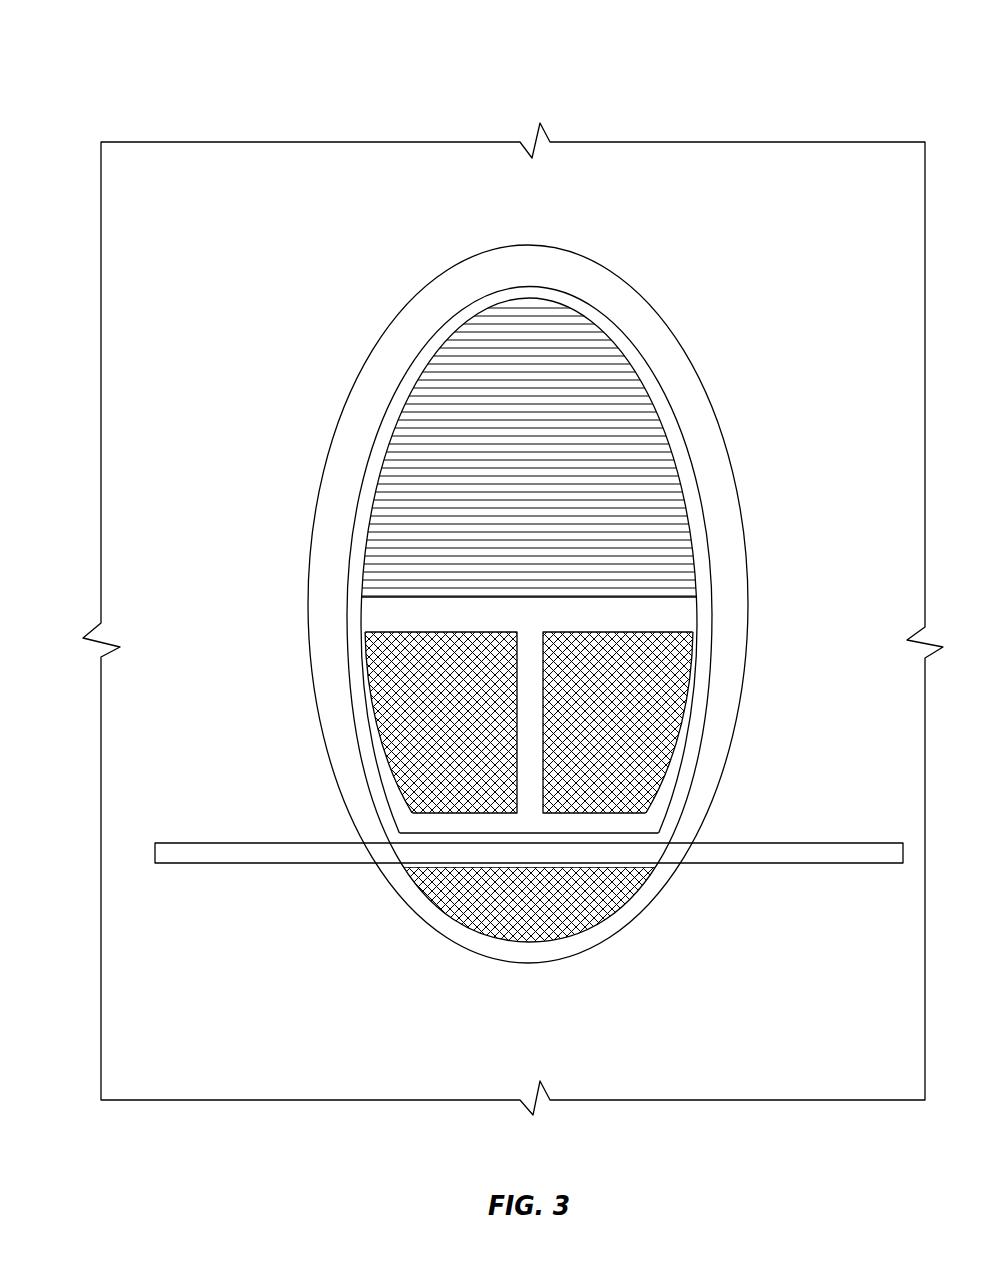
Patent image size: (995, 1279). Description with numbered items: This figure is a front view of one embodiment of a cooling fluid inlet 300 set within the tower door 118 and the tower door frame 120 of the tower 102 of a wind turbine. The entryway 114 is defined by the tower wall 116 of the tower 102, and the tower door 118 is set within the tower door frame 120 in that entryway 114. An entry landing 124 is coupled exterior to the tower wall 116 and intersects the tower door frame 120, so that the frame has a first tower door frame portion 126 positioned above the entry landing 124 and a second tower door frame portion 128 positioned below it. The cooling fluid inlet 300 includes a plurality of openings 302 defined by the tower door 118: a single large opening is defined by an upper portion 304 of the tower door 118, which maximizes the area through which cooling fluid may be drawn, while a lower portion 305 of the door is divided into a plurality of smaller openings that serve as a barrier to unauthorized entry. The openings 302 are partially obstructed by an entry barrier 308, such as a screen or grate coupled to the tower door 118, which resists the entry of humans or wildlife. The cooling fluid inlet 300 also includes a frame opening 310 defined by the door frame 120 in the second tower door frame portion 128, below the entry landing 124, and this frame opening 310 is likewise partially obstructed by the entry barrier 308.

The cooling fluid inlet 300 is at (800, 62).
The tower 102 is at (220, 162).
The entryway 114 is at (357, 268).
The tower wall 116 is at (142, 413).
The tower door 118 is at (615, 345).
The tower door frame 120 is at (570, 275).
The entry landing 124 is at (245, 860).
The first tower door frame portion 126 is at (374, 404).
The second tower door frame portion 128 is at (468, 937).
The opening 302 is at (657, 425).
The upper portion 304 is at (706, 500).
The lower portion 305 is at (691, 715).
The entry barrier 308 is at (661, 467).
The frame opening 310 is at (589, 913).